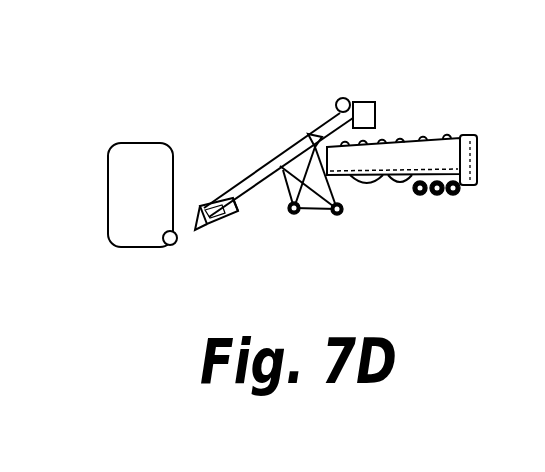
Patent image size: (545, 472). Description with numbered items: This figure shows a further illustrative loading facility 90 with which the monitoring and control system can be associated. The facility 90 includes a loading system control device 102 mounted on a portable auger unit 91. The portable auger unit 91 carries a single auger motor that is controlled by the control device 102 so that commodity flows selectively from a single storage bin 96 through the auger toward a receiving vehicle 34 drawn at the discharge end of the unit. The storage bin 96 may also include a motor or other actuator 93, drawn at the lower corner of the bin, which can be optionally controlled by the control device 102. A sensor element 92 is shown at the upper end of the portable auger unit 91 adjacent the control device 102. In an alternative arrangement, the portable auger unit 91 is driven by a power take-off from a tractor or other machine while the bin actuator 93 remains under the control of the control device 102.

The facility 90 is at (182, 107).
The portable auger unit 91 is at (257, 172).
The conveyor sensor 92 is at (339, 98).
The actuator 93 is at (171, 246).
The storage bin 96 is at (108, 197).
The loading system control device 102 is at (377, 107).
The trailer 34 is at (477, 163).